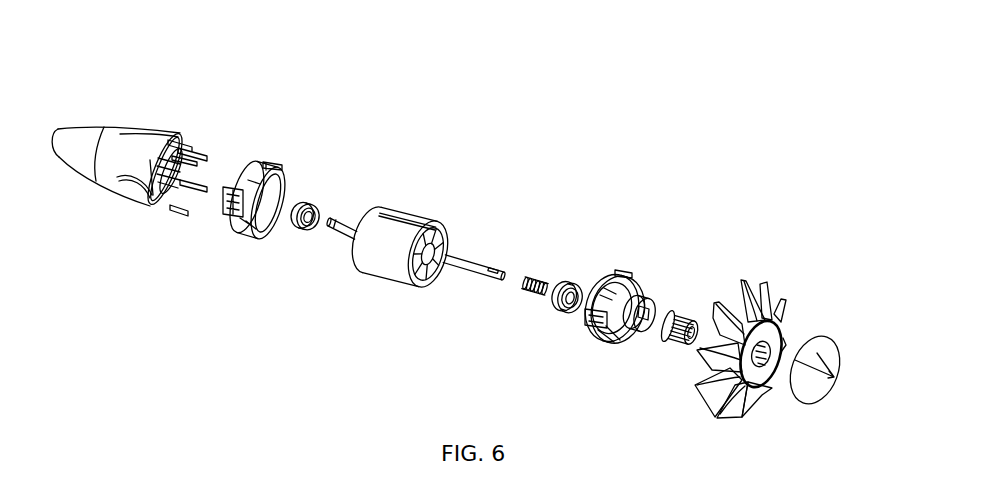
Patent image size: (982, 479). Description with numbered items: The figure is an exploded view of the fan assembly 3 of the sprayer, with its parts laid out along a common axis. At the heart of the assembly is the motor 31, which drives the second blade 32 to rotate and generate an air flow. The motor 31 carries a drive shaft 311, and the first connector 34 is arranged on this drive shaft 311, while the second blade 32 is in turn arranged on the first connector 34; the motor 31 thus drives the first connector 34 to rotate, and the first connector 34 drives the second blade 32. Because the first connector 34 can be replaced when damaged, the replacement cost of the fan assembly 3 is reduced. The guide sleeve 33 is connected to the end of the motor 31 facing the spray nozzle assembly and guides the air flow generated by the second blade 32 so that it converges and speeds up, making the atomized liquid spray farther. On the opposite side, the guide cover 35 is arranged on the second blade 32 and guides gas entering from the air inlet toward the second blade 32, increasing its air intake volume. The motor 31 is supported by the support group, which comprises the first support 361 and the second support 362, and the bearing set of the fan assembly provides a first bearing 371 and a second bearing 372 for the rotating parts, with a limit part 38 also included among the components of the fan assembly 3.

The fan assembly 3 is at (516, 76).
The guide sleeve 33 is at (129, 145).
The first support 361 is at (236, 214).
The first bearing 371 is at (316, 208).
The motor 31 is at (403, 218).
The drive shaft 311 is at (463, 262).
The limit part 38 is at (546, 281).
The second bearing 372 is at (583, 289).
The second support 362 is at (603, 340).
The first connector 34 is at (689, 320).
The second blade 32 is at (762, 300).
The guide cover 35 is at (817, 353).